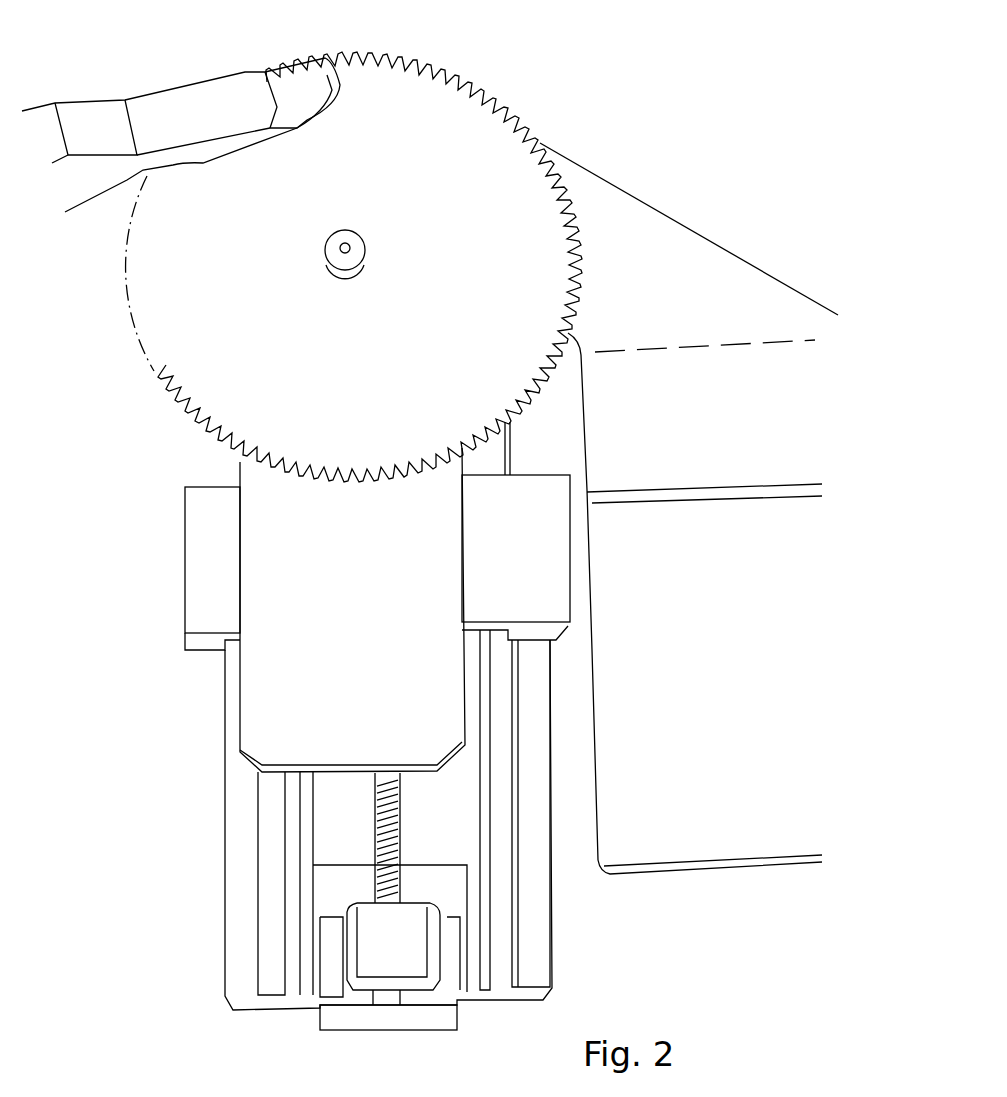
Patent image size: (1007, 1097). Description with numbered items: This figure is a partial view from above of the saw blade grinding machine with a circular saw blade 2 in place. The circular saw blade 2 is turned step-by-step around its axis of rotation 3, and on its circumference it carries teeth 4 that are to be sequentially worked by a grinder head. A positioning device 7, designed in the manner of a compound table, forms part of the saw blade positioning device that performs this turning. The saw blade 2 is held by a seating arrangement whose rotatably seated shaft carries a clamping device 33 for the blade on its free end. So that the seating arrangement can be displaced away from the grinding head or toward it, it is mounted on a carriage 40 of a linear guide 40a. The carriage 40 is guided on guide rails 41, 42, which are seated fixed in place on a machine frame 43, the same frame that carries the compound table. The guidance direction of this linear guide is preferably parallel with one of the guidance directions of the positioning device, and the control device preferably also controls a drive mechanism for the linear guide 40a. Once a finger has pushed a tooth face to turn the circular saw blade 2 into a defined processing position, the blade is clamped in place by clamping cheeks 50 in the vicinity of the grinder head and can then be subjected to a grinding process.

The circular saw blade 2 is at (483, 277).
The axis of rotation 3 is at (345, 245).
The teeth 4 is at (512, 88).
The positioning device 7 is at (760, 226).
The clamping device 33 is at (360, 225).
The carriage 40 is at (532, 578).
The linear guide 40a is at (201, 678).
The guide rail 41 is at (265, 822).
The guide rail 42 is at (500, 895).
The machine frame 43 is at (712, 914).
The clamping cheeks 50 is at (270, 155).